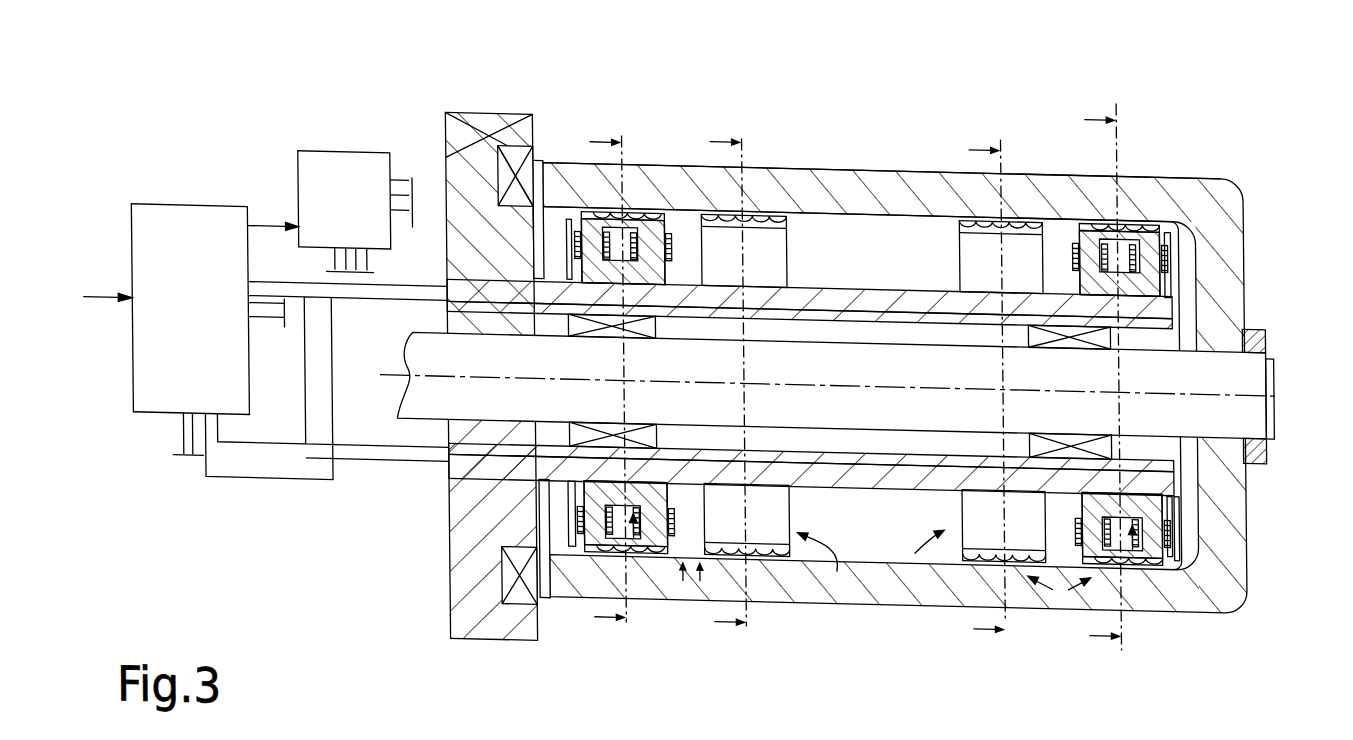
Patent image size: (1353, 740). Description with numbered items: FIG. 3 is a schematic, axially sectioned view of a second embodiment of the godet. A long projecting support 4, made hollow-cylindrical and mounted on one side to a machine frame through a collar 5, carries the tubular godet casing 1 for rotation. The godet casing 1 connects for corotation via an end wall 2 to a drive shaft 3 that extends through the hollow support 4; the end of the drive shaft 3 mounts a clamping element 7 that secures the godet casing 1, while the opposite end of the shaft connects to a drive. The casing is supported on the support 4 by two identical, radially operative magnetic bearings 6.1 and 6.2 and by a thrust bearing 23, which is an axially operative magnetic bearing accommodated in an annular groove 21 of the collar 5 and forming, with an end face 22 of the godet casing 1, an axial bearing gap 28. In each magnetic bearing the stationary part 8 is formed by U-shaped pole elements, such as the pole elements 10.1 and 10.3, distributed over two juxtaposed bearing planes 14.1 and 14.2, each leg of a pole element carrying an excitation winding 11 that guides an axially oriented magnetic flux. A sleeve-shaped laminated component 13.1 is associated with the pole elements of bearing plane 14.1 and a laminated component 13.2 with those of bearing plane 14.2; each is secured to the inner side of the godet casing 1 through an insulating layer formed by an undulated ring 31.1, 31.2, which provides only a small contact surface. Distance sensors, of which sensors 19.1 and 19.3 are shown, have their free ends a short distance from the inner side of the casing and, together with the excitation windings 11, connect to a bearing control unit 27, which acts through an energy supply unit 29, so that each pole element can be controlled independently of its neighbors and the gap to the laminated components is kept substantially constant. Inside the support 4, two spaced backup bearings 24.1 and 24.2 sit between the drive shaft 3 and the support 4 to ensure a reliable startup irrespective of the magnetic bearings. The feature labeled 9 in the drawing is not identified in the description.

The godet casing 1 is at (930, 208).
The end wall 2 is at (1231, 239).
The drive shaft 3 is at (881, 338).
The support 4 is at (911, 295).
The collar 5 is at (449, 161).
The magnetic bearing 6.1 is at (913, 545).
The magnetic bearing 6.2 is at (835, 565).
The clamping element 7 is at (1275, 328).
The stationary part 8 is at (631, 530).
The flux direction arrows 9 is at (689, 583).
The pole element 10.1 is at (657, 213).
The pole element 10.3 is at (571, 600).
The excitation winding 11 is at (689, 204).
The laminated component 13.1 is at (586, 212).
The laminated component 13.2 is at (762, 208).
The bearing plane 14.1 is at (624, 622).
The bearing plane 14.2 is at (748, 623).
The sensor 19.1 is at (539, 236).
The sensor 19.3 is at (571, 513).
The annular groove 21 is at (502, 152).
The end face 22 is at (448, 637).
The thrust bearing 23 is at (459, 150).
The backup bearing 24.1 is at (1056, 340).
The backup bearing 24.2 is at (593, 337).
The bearing control unit 27 is at (150, 383).
The axial bearing gap 28 is at (542, 161).
The energy supply unit 29 is at (301, 207).
The undulated ring 31.1 is at (642, 228).
The undulated ring 31.2 is at (824, 339).